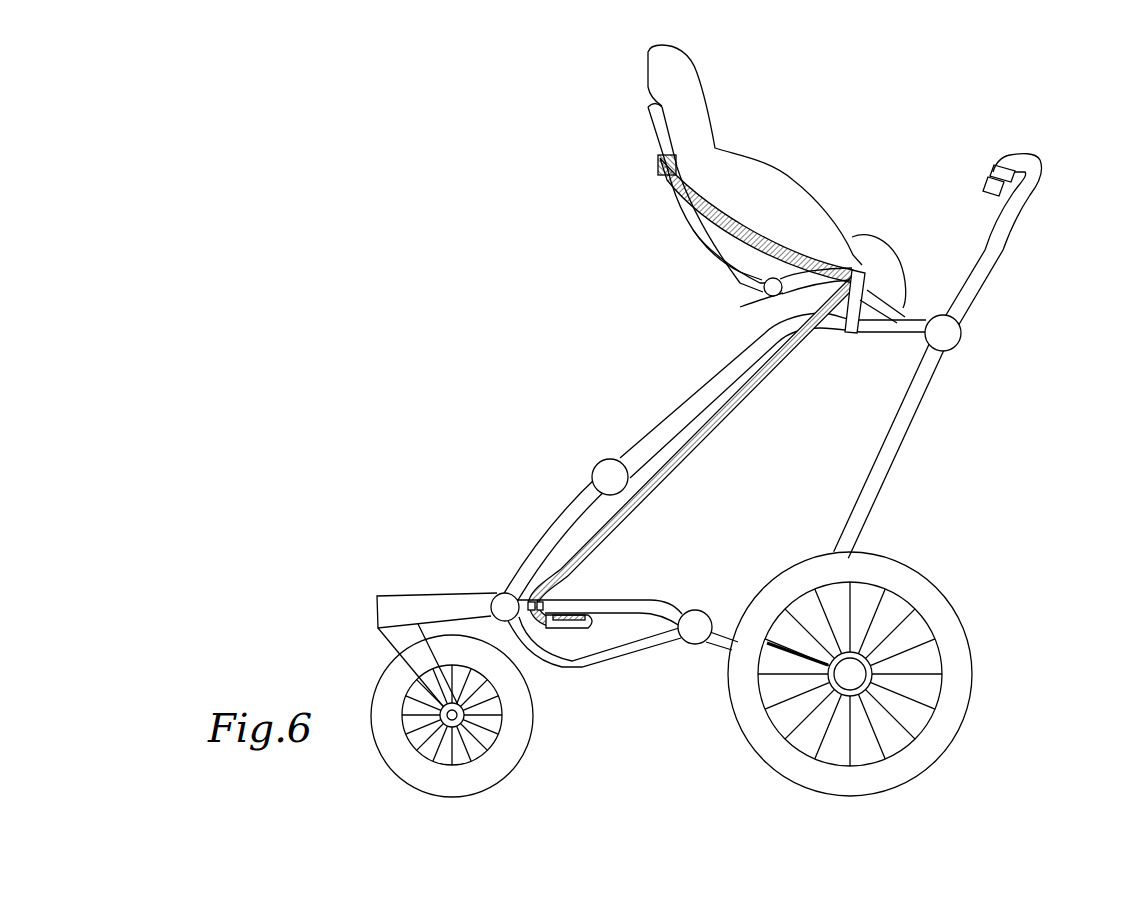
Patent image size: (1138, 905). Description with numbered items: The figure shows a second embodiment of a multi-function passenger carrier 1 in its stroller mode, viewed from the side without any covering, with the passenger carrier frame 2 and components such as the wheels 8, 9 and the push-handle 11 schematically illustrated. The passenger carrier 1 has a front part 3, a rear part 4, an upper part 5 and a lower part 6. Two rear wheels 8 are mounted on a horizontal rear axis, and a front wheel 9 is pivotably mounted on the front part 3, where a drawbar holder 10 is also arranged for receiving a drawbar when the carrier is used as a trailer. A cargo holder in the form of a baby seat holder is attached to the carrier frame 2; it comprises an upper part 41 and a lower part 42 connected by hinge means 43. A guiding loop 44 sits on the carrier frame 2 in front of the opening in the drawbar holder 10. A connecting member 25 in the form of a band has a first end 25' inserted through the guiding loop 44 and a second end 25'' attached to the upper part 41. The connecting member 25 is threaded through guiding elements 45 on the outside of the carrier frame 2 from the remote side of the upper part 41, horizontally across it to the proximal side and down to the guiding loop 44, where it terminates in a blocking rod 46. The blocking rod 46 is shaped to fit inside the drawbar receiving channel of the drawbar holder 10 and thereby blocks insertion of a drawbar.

The multi-function passenger carrier 1 is at (381, 191).
The passenger carrier frame 2 is at (670, 422).
The front part 3 is at (522, 552).
The rear part 4 is at (905, 454).
The upper part 5 is at (912, 316).
The lower part 6 is at (650, 655).
The rear wheels 8 is at (953, 637).
The front wheel 9 is at (511, 744).
The drawbar holder 10 is at (598, 615).
The push-handle 11 is at (1033, 194).
The connecting member 25 is at (695, 440).
The first end of connecting member 25' is at (553, 655).
The second end of connecting member 25'' is at (718, 217).
The upper part of cargo holder 41 is at (678, 198).
The lower part of cargo holder 42 is at (887, 237).
The hinge means 43 is at (768, 294).
The guiding loop 44 is at (558, 602).
The guiding elements 45 is at (858, 265).
The blocking rod 46 is at (565, 620).